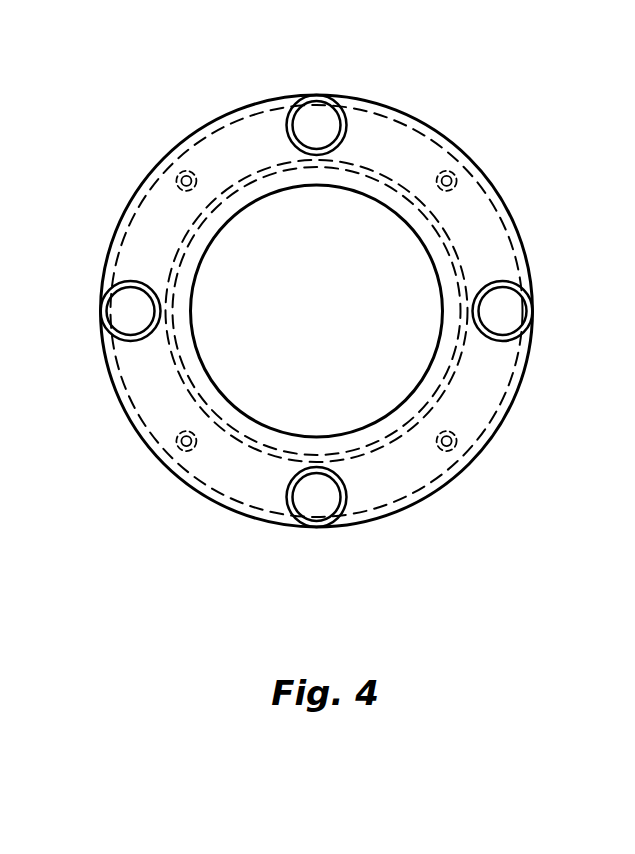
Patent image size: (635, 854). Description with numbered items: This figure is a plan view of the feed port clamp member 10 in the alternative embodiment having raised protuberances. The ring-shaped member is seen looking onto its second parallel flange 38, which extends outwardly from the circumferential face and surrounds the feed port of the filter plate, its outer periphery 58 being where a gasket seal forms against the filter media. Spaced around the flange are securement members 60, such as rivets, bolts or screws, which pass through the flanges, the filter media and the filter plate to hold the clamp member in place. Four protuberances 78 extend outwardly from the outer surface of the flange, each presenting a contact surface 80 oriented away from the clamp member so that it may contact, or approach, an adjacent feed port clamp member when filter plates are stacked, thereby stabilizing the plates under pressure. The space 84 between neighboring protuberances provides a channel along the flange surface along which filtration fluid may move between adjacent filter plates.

The feed port clamp member 10 is at (377, 516).
The second parallel flange 38 is at (493, 395).
The outer periphery 58 is at (421, 120).
The securement members 60 is at (184, 174).
The protuberances 78 is at (313, 93).
The contact surface 80 is at (328, 123).
The space 84 is at (240, 137).